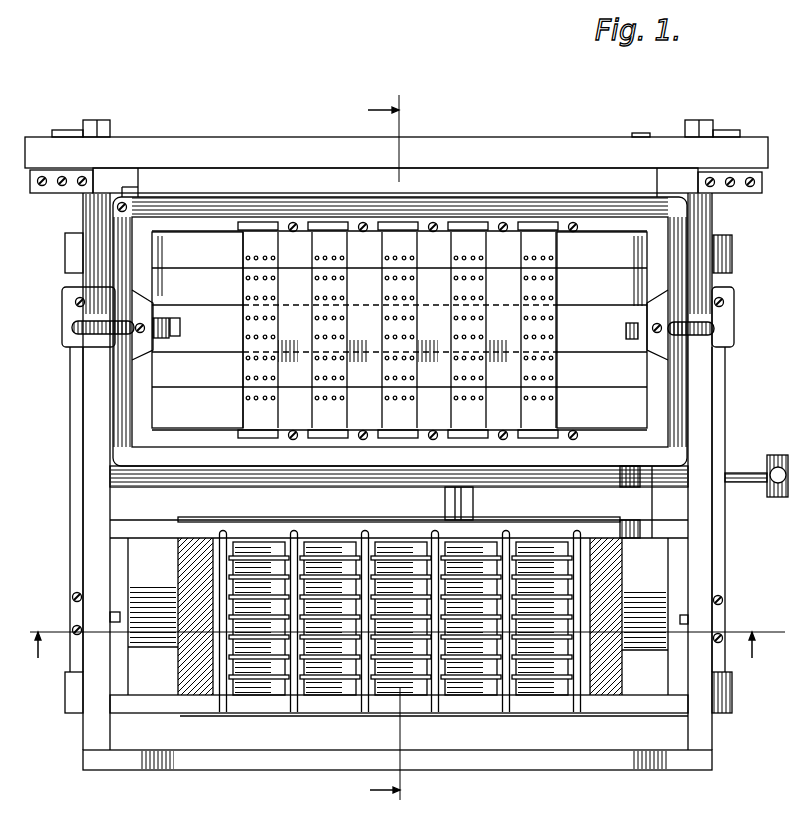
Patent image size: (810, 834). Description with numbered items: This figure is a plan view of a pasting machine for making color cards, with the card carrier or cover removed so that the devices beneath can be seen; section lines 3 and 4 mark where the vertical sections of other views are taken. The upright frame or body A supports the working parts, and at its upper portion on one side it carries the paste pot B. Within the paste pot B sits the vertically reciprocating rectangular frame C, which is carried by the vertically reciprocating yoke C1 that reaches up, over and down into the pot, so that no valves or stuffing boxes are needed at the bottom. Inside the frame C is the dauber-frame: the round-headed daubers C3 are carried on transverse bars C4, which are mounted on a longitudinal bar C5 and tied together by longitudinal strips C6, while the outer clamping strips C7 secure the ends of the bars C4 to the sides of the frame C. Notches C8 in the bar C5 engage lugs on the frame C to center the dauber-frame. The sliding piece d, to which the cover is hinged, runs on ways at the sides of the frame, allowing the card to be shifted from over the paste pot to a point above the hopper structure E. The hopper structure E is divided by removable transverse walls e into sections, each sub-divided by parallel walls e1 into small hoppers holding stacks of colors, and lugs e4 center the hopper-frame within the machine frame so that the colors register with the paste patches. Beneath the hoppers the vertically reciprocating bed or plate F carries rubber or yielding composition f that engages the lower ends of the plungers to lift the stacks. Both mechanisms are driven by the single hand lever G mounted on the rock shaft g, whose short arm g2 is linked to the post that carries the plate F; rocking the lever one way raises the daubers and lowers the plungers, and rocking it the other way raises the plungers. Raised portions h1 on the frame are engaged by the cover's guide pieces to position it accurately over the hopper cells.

The sliding piece d is at (40, 142).
The paste pot B is at (212, 200).
The outer clamping strips C7 is at (270, 228).
The section line 4- 4 is at (384, 448).
The longitudinal strips C6 is at (440, 265).
The upright frame or body A is at (65, 250).
The vertically reciprocating rectangular frame C is at (650, 245).
The vertically reciprocating yoke C1 is at (82, 326).
The notches C8 is at (178, 320).
The transverse bars C4 is at (255, 290).
The daubers C3 is at (247, 337).
The longitudinal bar C5 is at (206, 352).
The hand lever G is at (777, 468).
The rock shaft g is at (752, 484).
The vertically reciprocating bed or plate F is at (211, 520).
The parallel walls e1 is at (262, 557).
The short arm g2 is at (445, 498).
The rubber or yielding composition f is at (400, 616).
The lugs e4 is at (110, 617).
The section line 3- 3 is at (396, 641).
The raised portions h1 is at (106, 757).
The hopper structure E is at (165, 705).
The removable transverse walls e is at (226, 680).